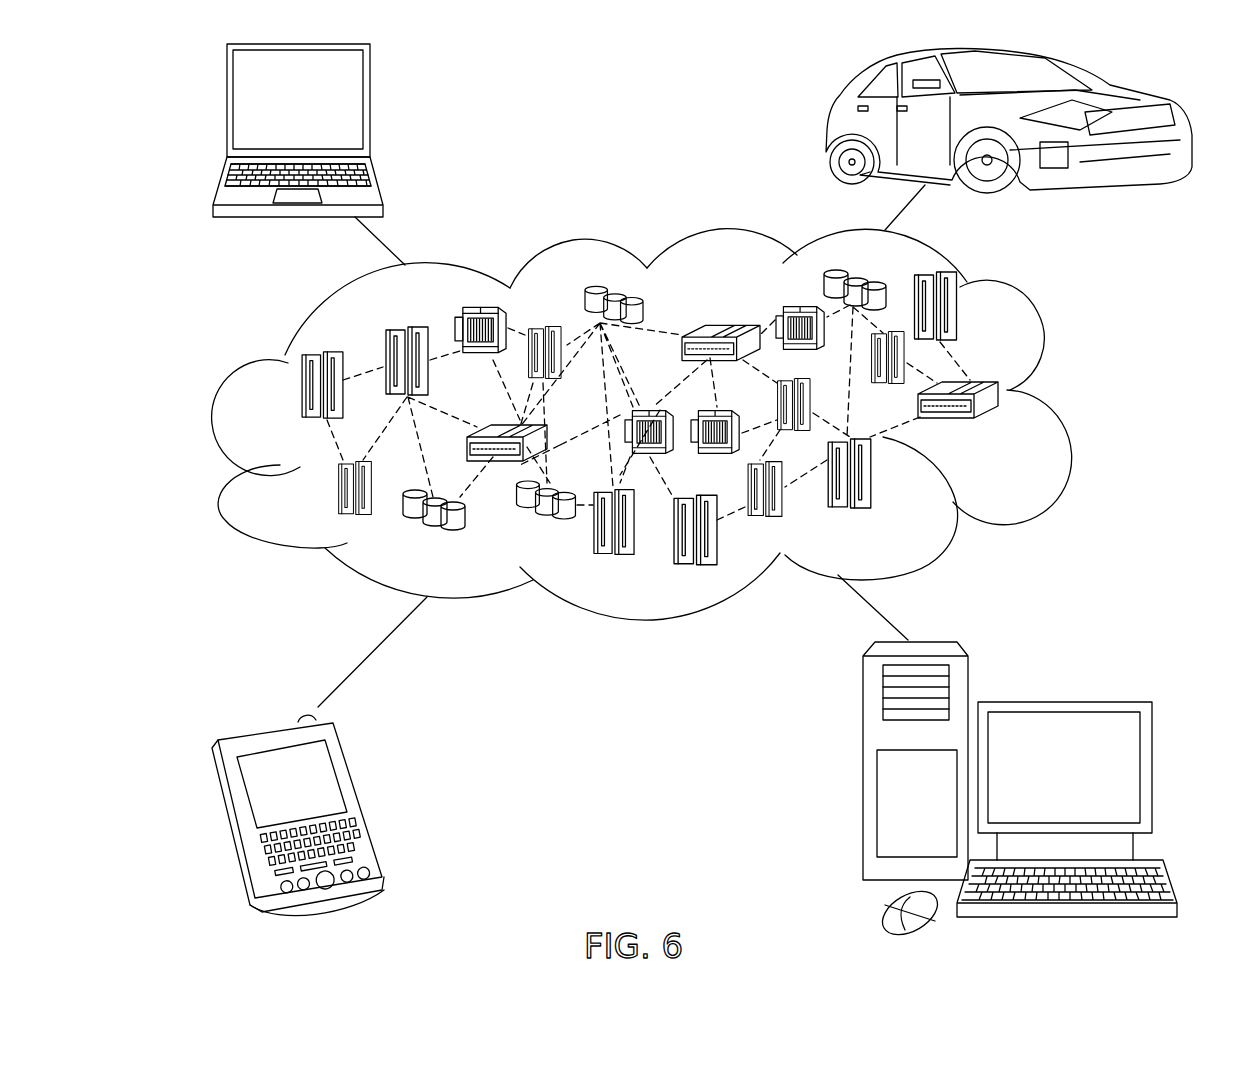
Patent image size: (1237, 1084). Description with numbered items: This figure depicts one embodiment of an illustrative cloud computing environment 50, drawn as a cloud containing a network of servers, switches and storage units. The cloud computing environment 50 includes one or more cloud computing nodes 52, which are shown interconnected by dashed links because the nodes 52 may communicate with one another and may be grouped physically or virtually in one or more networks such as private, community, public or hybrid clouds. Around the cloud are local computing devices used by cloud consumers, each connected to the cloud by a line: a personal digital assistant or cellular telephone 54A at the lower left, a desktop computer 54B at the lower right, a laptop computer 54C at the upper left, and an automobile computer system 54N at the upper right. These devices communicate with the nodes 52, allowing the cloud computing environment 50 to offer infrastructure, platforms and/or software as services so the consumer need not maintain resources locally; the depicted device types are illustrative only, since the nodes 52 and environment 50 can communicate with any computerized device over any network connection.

The cloud computing environment 50 is at (1063, 392).
The cloud computing nodes 52 is at (1010, 428).
The personal digital assistant or cellular telephone 54A is at (362, 797).
The desktop computer 54B is at (1060, 702).
The laptop computer 54C is at (370, 108).
The automobile computer system 54N is at (828, 122).